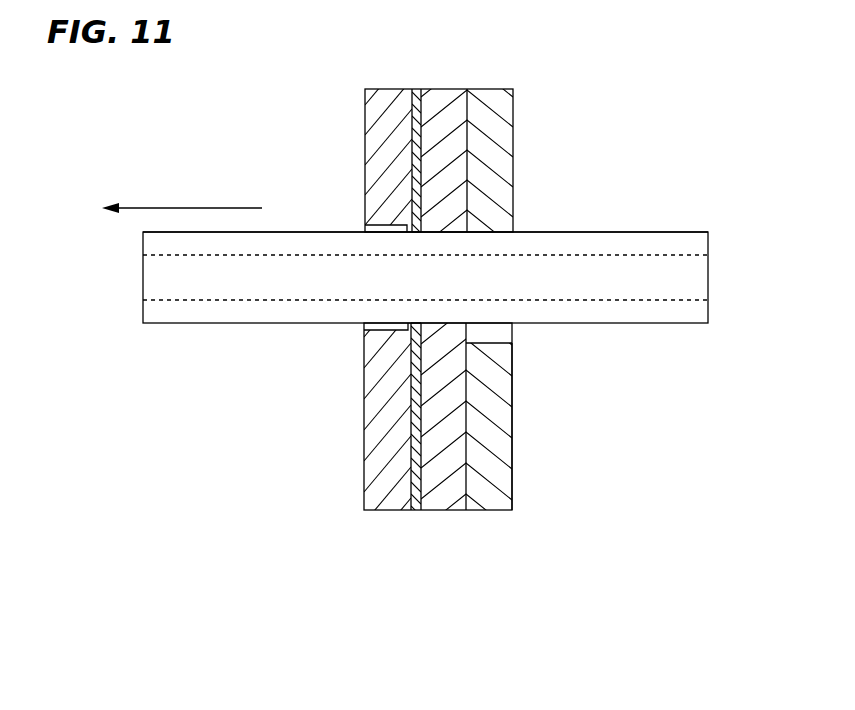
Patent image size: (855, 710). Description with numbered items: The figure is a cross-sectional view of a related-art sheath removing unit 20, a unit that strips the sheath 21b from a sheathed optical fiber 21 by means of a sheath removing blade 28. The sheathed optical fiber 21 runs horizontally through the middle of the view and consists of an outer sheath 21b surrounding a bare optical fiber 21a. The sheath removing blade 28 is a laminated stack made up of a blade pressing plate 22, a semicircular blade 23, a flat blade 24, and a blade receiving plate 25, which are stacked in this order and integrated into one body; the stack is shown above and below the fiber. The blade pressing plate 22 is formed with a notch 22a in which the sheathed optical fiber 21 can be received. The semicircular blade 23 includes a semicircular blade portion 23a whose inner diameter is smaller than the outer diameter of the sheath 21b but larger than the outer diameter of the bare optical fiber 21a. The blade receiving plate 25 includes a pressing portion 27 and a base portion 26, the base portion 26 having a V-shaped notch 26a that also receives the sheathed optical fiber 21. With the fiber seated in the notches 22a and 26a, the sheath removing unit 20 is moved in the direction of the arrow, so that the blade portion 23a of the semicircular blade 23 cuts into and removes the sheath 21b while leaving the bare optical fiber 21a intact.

The sheath removing unit 20 is at (588, 61).
The sheathed optical fiber 21 is at (429, 276).
The bare optical fiber 21a is at (663, 252).
The sheath 21b is at (597, 232).
The blade pressing plate 22 is at (387, 510).
The notch 22a is at (385, 228).
The semicircular blade 23 is at (417, 510).
The semicircular blade portion 23a is at (418, 232).
The flat blade 24 is at (437, 510).
The blade receiving plate 25 is at (503, 468).
The base portion 26 is at (472, 444).
The V-shaped notch 26a is at (512, 333).
The pressing portion 27 is at (513, 160).
The sheath removing blade 28 is at (431, 444).